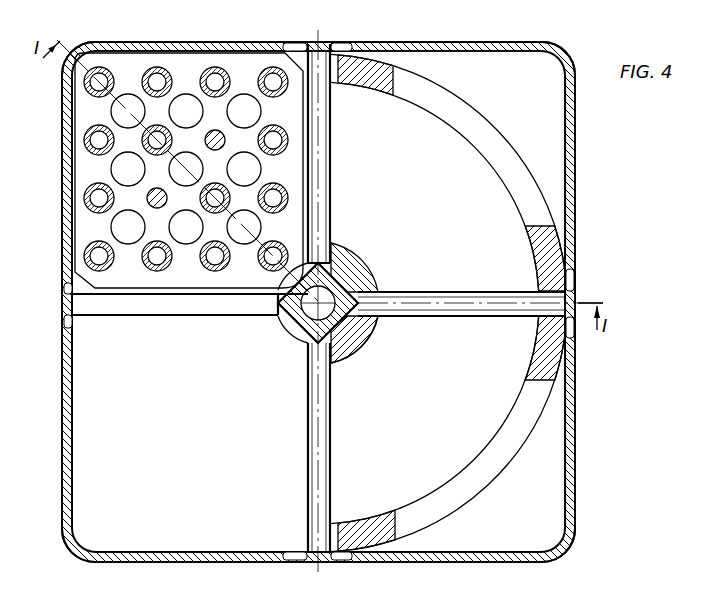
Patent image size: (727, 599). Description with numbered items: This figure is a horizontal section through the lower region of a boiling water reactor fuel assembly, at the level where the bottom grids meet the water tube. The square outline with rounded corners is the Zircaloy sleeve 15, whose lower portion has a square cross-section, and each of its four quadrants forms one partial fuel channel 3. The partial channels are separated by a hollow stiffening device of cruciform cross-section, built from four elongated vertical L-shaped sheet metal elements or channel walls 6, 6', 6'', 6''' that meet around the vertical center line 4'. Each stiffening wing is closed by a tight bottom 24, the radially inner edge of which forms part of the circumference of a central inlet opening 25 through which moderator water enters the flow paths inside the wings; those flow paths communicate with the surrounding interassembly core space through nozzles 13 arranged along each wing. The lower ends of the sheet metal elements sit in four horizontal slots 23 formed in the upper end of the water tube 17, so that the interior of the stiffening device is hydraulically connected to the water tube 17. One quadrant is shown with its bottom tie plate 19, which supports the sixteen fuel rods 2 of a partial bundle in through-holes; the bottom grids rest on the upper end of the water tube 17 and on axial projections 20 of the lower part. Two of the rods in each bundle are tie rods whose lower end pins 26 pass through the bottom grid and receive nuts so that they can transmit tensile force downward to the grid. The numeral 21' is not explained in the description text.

The fuel rods 2 is at (89, 191).
The partial fuel channel 3 is at (558, 86).
The vertical center line 4' is at (308, 310).
The channel wall 6 is at (461, 328).
The channel wall 6' is at (338, 153).
The channel wall 6'' is at (175, 326).
The channel wall 6''' is at (294, 447).
The nozzles 13 is at (323, 45).
The sleeve 15 is at (573, 447).
The water tube 17 is at (360, 345).
The bottom tie plate 19 is at (188, 72).
The axial projections 20 is at (360, 62).
The left housing wall 21' is at (44, 302).
The horizontal slots 23 is at (375, 321).
The tight bottom 24 is at (329, 131).
The central inlet opening 25 is at (343, 259).
The lower end pins 26 is at (219, 131).